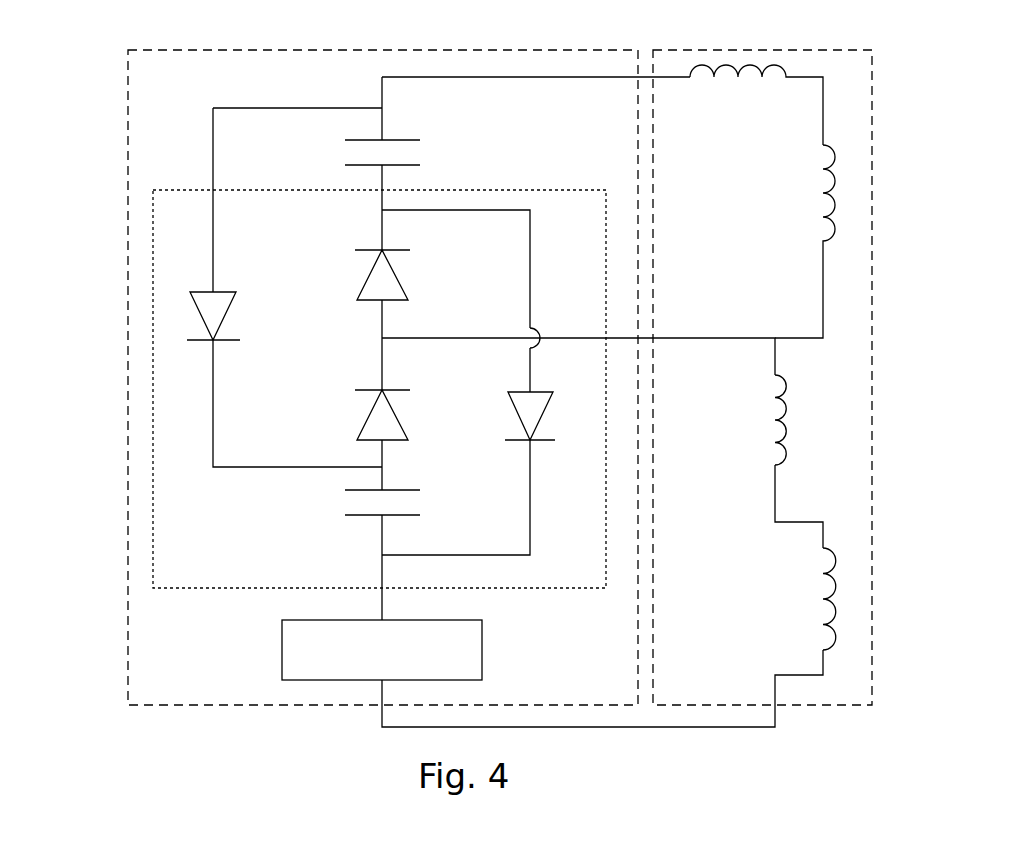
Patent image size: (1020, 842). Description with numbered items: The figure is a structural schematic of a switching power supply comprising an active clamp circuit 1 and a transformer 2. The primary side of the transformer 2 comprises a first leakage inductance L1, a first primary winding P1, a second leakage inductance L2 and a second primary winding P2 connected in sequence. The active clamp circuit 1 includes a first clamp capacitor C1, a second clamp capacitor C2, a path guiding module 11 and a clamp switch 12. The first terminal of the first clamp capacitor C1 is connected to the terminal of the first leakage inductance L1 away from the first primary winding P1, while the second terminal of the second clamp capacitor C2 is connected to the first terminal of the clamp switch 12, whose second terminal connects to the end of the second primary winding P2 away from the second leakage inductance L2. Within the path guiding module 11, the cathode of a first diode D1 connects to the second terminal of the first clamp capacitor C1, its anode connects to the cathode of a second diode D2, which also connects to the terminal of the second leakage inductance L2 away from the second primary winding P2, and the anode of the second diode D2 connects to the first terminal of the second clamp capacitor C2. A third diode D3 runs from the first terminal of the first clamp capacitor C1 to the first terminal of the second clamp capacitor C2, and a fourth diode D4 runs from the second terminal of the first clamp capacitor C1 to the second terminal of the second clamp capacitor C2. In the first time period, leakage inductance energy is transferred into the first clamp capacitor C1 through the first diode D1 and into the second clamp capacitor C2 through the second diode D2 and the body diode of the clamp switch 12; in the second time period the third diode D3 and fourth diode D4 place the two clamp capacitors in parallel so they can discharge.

The active clamp circuit 1 is at (128, 215).
The transformer 2 is at (872, 205).
The path guiding module 11 is at (515, 190).
The clamp switch 12 is at (282, 662).
The first clamp capacitor C1 is at (401, 154).
The second clamp capacitor C2 is at (403, 502).
The first diode D1 is at (402, 275).
The second diode D2 is at (401, 415).
The third diode D3 is at (230, 316).
The fourth diode D4 is at (549, 416).
The first leakage inductance L1 is at (756, 105).
The second leakage inductance L2 is at (760, 420).
The first primary winding P1 is at (805, 241).
The second primary winding P2 is at (810, 599).